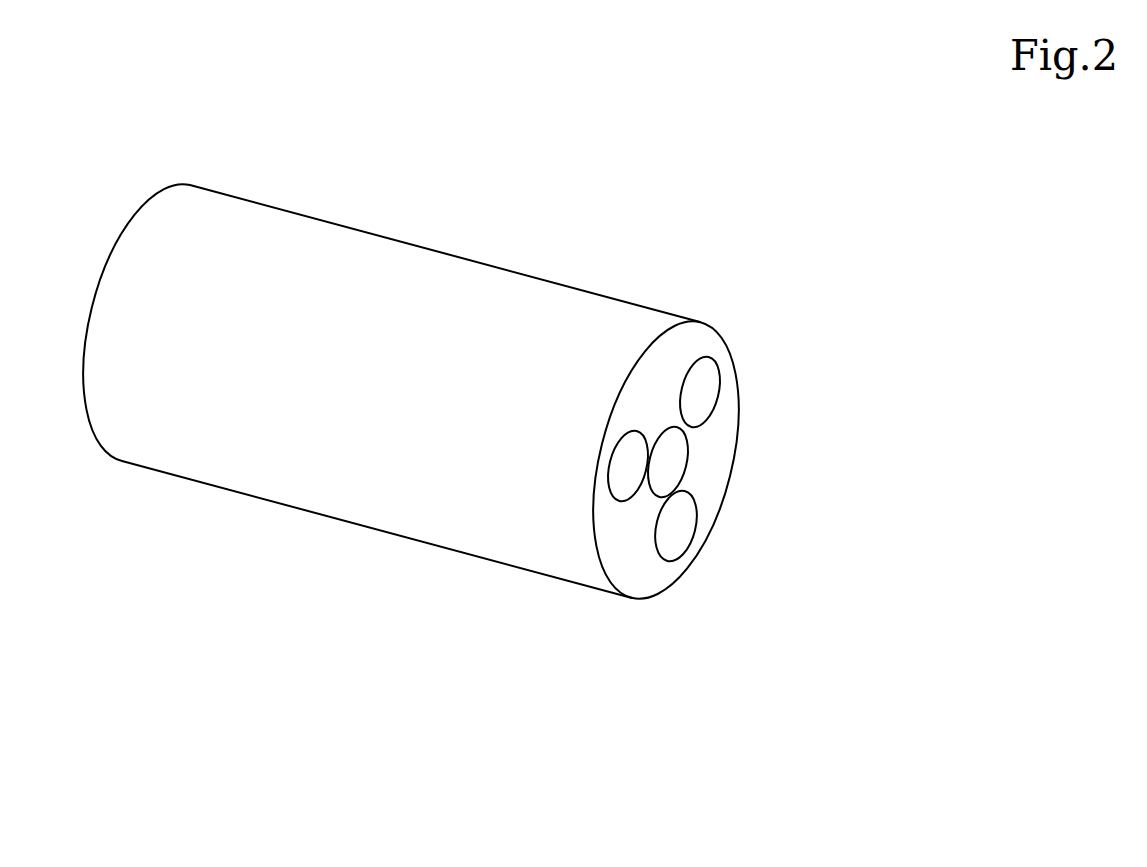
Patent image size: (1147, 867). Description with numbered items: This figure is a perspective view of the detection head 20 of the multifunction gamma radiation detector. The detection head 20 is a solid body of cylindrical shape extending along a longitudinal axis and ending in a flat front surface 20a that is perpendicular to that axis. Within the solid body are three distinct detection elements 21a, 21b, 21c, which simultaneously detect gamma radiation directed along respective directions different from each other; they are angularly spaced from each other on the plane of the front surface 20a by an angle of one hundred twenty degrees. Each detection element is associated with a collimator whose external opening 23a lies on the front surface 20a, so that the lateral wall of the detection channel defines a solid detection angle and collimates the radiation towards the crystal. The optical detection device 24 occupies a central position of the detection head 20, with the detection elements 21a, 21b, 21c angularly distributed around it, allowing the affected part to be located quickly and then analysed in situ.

The detection head 20 is at (342, 448).
The front surface 20a is at (625, 557).
The detection element 21a is at (600, 489).
The detection element 21b is at (698, 519).
The detection element 21c is at (720, 374).
The opening 23a is at (699, 397).
The optical detection device 24 is at (684, 467).